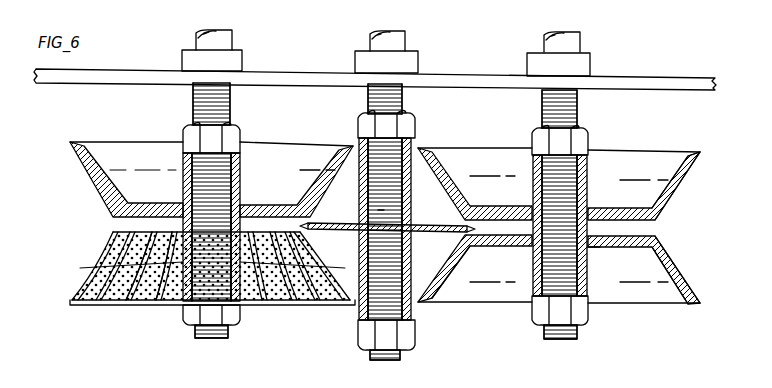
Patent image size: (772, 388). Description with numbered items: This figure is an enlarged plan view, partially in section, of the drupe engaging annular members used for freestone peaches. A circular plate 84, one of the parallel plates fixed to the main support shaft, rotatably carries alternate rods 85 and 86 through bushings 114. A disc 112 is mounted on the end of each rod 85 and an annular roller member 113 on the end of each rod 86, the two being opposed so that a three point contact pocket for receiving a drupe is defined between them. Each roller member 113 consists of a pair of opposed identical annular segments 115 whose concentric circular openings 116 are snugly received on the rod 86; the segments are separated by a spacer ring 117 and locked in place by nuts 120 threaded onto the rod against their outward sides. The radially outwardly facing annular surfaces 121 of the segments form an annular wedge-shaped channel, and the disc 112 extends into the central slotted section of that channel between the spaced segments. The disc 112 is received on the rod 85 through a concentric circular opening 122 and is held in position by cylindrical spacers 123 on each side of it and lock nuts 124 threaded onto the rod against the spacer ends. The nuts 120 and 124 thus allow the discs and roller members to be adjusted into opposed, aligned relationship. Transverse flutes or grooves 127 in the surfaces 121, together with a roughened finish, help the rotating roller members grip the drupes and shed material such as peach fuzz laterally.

The circular plates 84 is at (644, 82).
The rods 85 is at (368, 46).
The rods 86 is at (198, 46).
The discs 112 is at (452, 244).
The annular roller members 113 is at (299, 326).
The bushings 114 is at (240, 60).
The annular segments 115 is at (628, 152).
The concentric circular openings 116 is at (548, 180).
The spacer ring 117 is at (592, 250).
The nuts 120 is at (190, 134).
The radially outwardly facing annular surfaces 121 is at (672, 200).
The circular opening 122 is at (378, 210).
The cylindrical spacers 123 is at (360, 150).
The lock nuts 124 is at (416, 122).
The flutes or grooves 127 is at (176, 296).